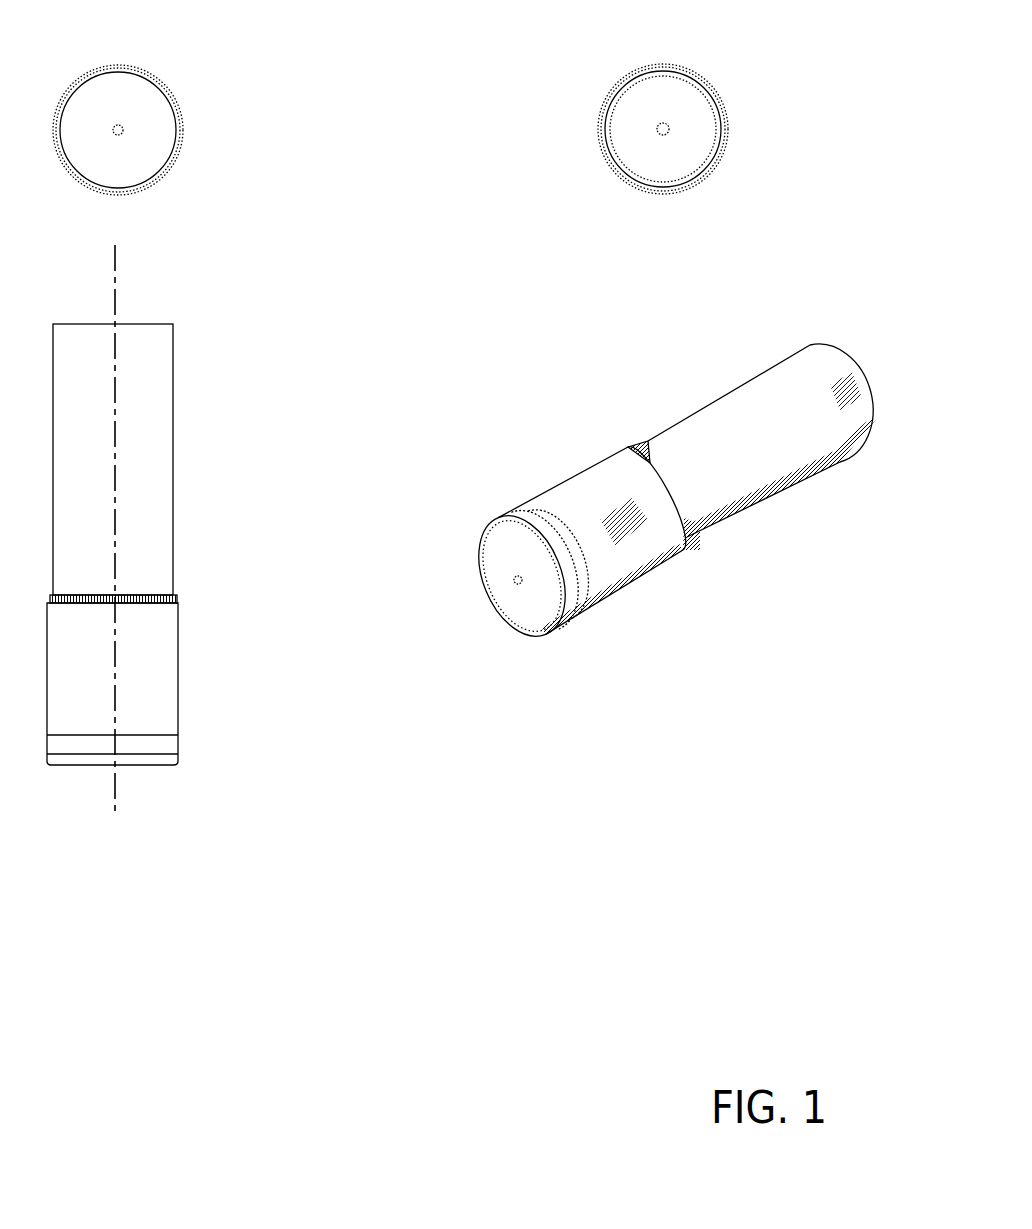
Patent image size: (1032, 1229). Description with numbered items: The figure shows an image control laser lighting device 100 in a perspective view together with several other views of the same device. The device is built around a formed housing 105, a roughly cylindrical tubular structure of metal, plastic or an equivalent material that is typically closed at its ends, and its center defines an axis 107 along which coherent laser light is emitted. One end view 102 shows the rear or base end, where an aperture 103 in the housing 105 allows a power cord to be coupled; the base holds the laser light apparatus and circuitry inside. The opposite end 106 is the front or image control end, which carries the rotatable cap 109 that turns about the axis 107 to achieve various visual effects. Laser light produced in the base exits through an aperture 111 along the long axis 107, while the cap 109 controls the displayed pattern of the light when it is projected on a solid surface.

The image control laser lighting device 100 is at (771, 480).
The end view 102 is at (118, 106).
The aperture 103 is at (125, 126).
The housing 105 is at (175, 147).
The opposite end 106 is at (663, 105).
The axis 107 is at (116, 549).
The rotatable cap 109 is at (695, 143).
The aperture 111 is at (516, 583).